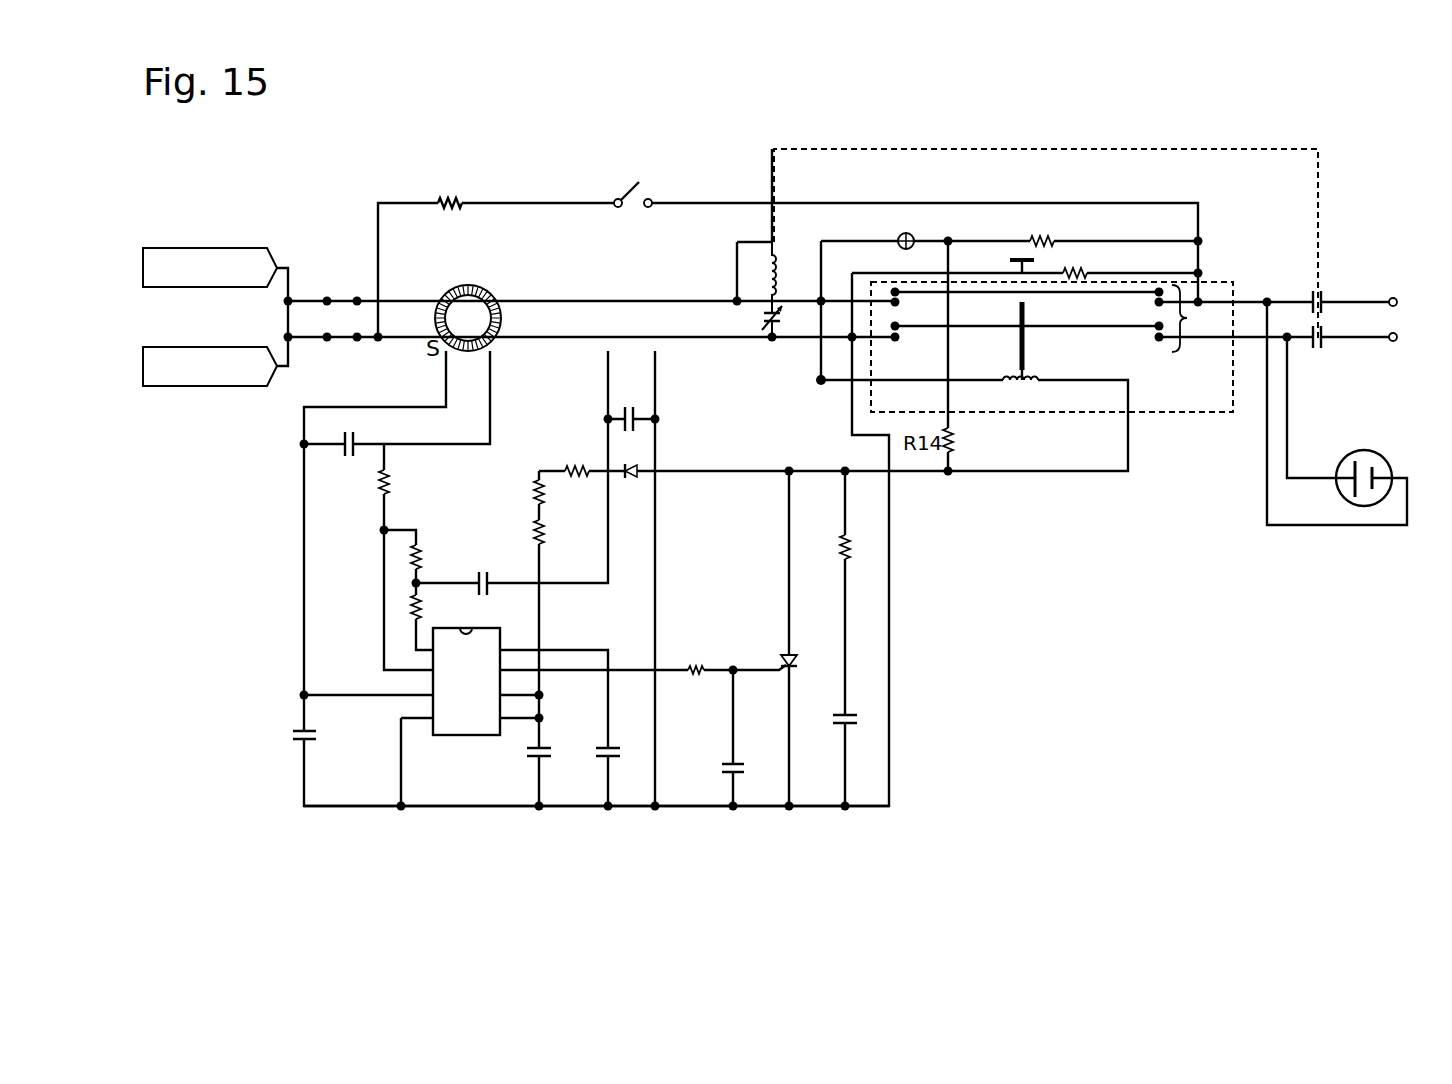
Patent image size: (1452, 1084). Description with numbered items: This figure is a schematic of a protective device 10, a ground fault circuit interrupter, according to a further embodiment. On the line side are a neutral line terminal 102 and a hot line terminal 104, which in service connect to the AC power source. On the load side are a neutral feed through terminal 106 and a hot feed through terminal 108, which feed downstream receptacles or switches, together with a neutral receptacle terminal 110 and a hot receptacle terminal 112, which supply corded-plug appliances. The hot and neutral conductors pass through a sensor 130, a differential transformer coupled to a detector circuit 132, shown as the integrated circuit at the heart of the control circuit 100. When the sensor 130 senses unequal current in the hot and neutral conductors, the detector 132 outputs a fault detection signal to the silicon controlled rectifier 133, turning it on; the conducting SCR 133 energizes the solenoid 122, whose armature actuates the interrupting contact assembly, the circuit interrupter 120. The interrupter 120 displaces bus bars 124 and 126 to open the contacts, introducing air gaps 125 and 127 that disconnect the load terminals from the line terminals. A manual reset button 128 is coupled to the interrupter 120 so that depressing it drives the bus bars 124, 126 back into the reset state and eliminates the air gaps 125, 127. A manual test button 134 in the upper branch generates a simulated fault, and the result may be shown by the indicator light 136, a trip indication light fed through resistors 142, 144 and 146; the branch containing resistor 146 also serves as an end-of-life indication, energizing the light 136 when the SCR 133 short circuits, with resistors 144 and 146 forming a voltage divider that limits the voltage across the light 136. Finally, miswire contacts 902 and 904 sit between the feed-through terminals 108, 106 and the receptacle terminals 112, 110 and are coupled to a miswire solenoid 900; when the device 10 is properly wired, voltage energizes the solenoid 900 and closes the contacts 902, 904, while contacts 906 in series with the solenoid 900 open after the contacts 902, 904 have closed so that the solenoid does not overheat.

The protective device 10 is at (903, 120).
The control circuit 100 is at (910, 551).
The neutral line terminal 102 is at (212, 347).
The hot line terminal 104 is at (212, 248).
The neutral feed through terminal 106 is at (1396, 347).
The hot feed through terminal 108 is at (1392, 298).
The neutral receptacle terminal 110 is at (1355, 462).
The hot receptacle terminal 112 is at (1374, 476).
The circuit interrupter 120 is at (1193, 413).
The solenoid 122 is at (1037, 378).
The bus bar 124 is at (1111, 330).
The air gap 125 is at (926, 300).
The bus bar 126 is at (1096, 290).
The air gap 127 is at (902, 334).
The manual reset button 128 is at (1019, 257).
The sensor 130 is at (466, 284).
The detector circuit 132 is at (466, 629).
The silicon controlled rectifier 133 is at (784, 655).
The manual test button 134 is at (649, 198).
The indicator light 136 is at (897, 238).
The resistor 142 is at (1041, 236).
The resistor 144 is at (1076, 268).
The resistor 146 is at (955, 437).
The miswire solenoid 900 is at (798, 256).
The miswire contact 902 is at (1315, 291).
The miswire contact 904 is at (1318, 352).
The contacts 906 is at (762, 320).